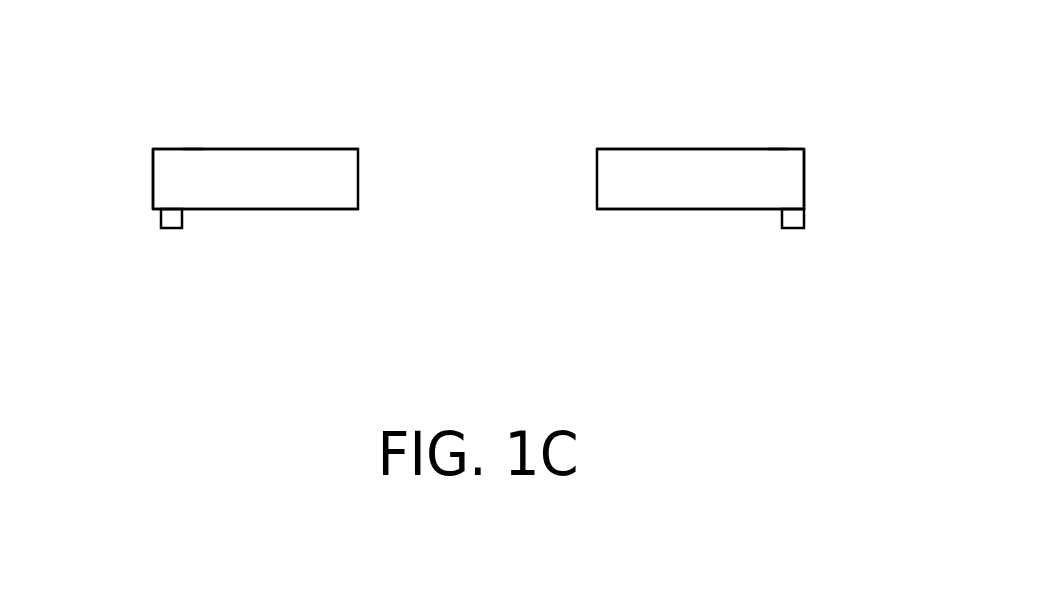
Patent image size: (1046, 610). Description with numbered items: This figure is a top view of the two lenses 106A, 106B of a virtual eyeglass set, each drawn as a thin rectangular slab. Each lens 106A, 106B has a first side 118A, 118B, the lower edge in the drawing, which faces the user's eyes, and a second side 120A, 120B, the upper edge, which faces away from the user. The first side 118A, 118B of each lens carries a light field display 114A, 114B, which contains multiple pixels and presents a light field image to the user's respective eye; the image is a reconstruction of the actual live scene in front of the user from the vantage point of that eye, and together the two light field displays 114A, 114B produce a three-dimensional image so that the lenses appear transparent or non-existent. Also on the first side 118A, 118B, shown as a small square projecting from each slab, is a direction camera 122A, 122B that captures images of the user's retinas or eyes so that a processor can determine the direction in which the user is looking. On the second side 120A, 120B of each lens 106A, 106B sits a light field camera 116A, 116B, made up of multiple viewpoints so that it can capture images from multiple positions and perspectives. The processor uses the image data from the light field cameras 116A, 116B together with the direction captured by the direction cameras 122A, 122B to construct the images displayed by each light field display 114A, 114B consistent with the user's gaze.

The light field display 114A is at (220, 208).
The light field camera 116A is at (193, 149).
The lens 106A is at (152, 182).
The first side 118A is at (337, 210).
The second side 120A is at (317, 147).
The direction camera 122A is at (158, 218).
The light field display 114B is at (713, 209).
The light field camera 116B is at (778, 148).
The lens 106B is at (805, 162).
The first side 118B is at (635, 210).
The second side 120B is at (662, 148).
The direction camera 122B is at (804, 217).